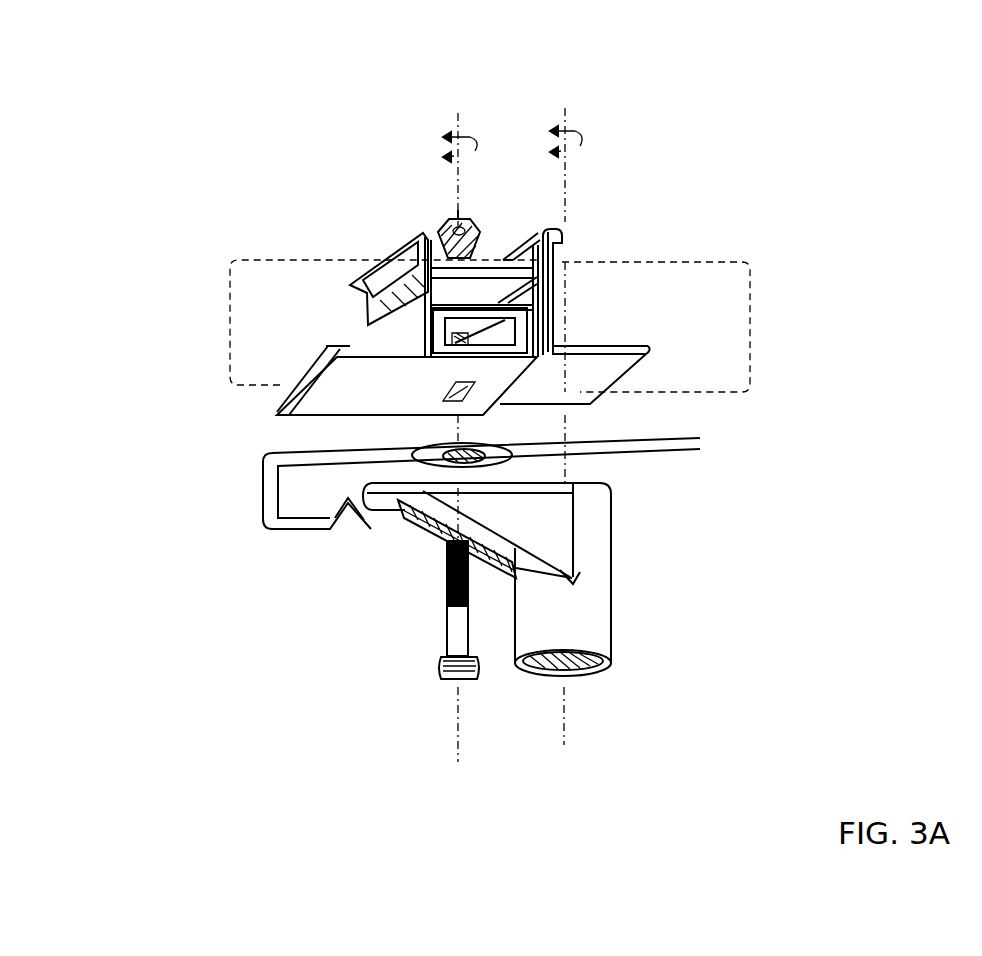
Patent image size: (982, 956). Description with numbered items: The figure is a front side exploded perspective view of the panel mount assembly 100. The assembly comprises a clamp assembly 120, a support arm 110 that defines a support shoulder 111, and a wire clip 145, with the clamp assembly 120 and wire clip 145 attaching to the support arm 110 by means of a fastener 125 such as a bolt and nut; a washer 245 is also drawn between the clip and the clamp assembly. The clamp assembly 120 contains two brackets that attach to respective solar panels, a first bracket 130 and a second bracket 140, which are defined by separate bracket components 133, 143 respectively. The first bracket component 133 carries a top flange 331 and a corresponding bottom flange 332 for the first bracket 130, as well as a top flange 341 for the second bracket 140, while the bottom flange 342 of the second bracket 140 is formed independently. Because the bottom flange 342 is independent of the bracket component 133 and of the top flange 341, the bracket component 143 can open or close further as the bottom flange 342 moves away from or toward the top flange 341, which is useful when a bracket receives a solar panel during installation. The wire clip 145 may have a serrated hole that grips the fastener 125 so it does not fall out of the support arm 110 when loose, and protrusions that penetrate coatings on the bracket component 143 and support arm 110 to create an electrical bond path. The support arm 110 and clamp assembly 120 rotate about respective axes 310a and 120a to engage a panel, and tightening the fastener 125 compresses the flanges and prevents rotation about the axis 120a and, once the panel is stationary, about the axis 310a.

The panel mount assembly 100 is at (881, 59).
The support arm 110 is at (626, 598).
The support shoulder 111 is at (514, 511).
The clamp assembly 120 is at (124, 204).
The axis 120a is at (454, 316).
The fastener 125 is at (438, 634).
The first bracket 130 is at (748, 392).
The first bracket component 133 is at (593, 378).
The second bracket 140 is at (230, 262).
The second bracket component 143 is at (330, 388).
The wire clip 145 is at (252, 489).
The washer 245 is at (581, 448).
The axis 310a is at (565, 278).
The top flange 331 is at (556, 227).
The bottom flange 332 is at (608, 345).
The top flange 341 is at (382, 246).
The bottom flange 342 is at (350, 348).